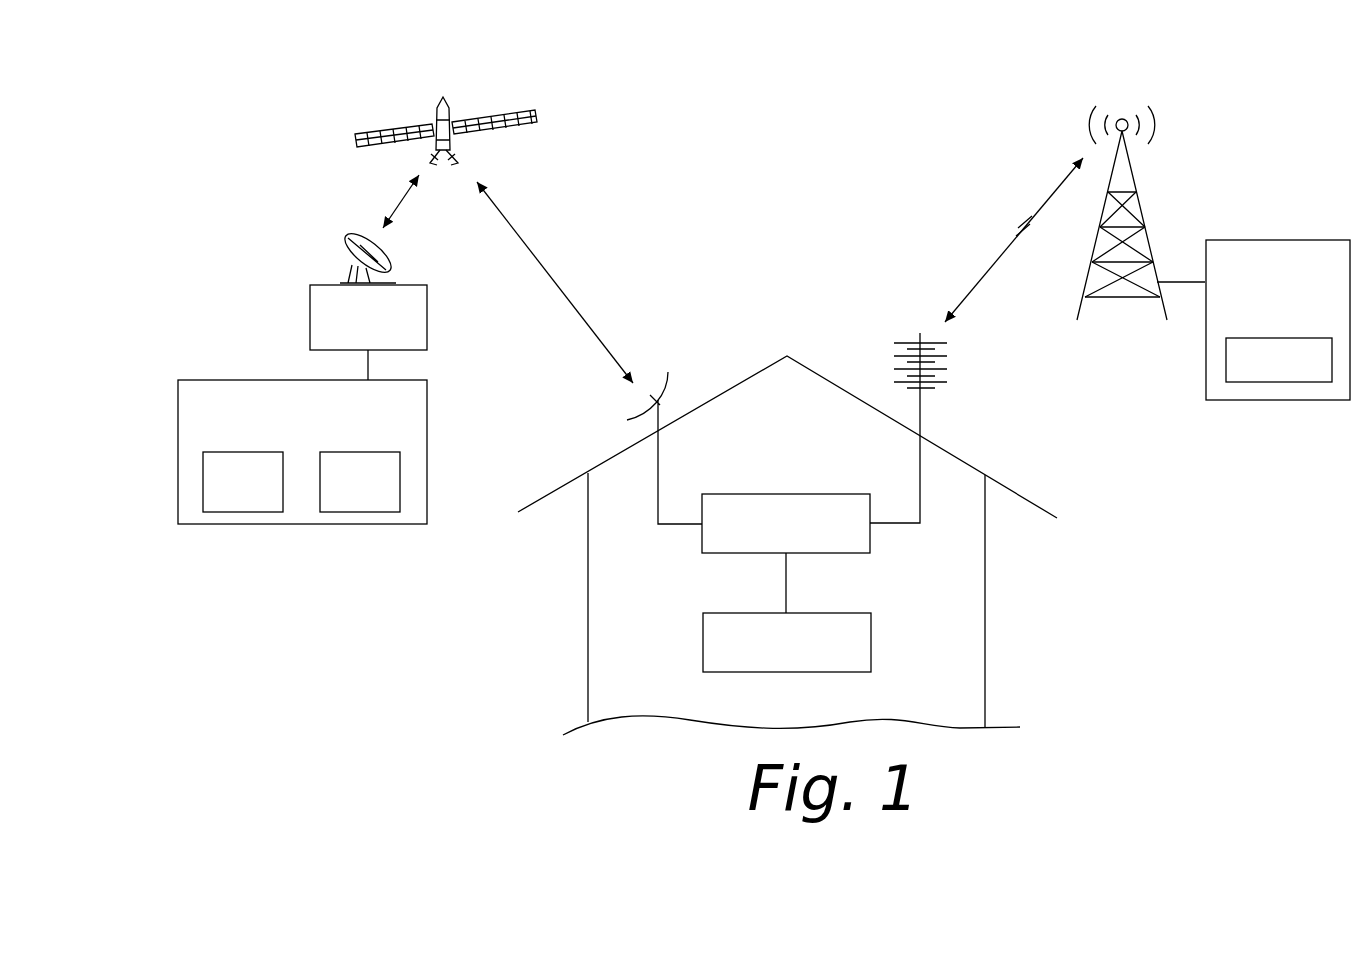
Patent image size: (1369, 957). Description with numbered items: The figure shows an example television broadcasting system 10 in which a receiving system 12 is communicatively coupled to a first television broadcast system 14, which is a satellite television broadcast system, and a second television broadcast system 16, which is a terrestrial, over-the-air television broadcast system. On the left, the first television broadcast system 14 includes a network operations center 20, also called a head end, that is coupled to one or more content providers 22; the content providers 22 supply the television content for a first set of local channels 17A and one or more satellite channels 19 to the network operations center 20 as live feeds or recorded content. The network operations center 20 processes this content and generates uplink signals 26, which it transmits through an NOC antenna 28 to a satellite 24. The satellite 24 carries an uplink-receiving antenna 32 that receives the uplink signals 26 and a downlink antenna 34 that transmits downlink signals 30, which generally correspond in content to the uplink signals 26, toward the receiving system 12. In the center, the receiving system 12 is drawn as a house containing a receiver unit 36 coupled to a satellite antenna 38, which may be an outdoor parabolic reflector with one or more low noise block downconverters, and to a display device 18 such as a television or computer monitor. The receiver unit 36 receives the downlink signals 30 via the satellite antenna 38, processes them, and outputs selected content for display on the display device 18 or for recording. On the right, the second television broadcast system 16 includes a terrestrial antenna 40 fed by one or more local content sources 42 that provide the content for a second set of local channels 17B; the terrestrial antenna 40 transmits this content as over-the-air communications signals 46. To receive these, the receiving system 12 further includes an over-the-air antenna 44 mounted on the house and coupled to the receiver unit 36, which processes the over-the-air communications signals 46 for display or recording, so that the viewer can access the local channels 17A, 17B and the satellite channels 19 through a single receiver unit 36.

The television broadcasting system 10 is at (778, 166).
The receiving system 12 is at (1112, 604).
The first television broadcast system 14 is at (275, 197).
The second television broadcast system 16 is at (1255, 185).
The first set of local channel(s) 17A is at (218, 512).
The second set of local channel(s) 17B is at (1296, 382).
The display device 18 is at (871, 633).
The satellite channels 19 is at (348, 512).
The network operations center 20 is at (427, 305).
The content providers 22 is at (427, 400).
The satellite 24 is at (383, 128).
The uplink signals 26 is at (408, 197).
The NOC antenna 28 is at (348, 248).
The downlink signals 30 is at (523, 237).
The uplink-receiving antenna 32 is at (428, 152).
The downlink antenna 34 is at (462, 152).
The receiver unit 36 is at (870, 540).
The satellite antenna 38 is at (668, 372).
The terrestrial antenna 40 is at (1088, 278).
The local content source 42 is at (1250, 400).
The over-the-air antenna 44 is at (922, 410).
The over-the-air communications signals 46 is at (1002, 256).